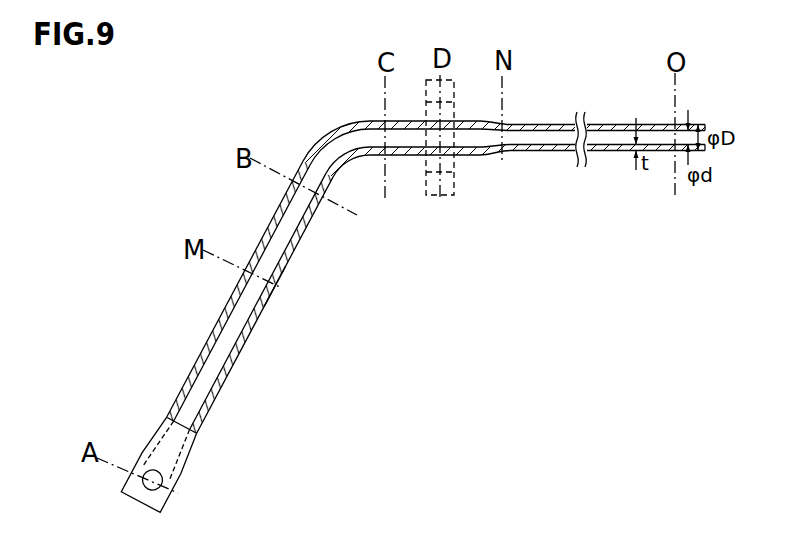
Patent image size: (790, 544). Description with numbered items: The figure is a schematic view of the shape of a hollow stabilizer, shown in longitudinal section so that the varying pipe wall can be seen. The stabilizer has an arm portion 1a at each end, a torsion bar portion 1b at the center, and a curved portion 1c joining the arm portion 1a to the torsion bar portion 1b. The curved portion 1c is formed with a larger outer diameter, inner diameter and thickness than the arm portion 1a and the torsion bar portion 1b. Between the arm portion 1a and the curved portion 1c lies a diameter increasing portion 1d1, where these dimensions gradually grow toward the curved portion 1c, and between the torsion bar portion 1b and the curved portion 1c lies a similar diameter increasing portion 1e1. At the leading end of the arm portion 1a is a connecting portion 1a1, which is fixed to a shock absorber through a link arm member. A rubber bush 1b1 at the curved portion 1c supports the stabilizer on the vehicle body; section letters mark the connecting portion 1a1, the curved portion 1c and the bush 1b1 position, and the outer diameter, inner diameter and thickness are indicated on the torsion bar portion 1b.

The arm portion 1a is at (191, 305).
The torsion bar portion 1b is at (502, 48).
The curved portion 1c is at (497, 48).
The connecting portion 1a1 is at (177, 468).
The rubber bush 1b1 is at (451, 162).
The diameter increasing portion 1d1 is at (296, 287).
The diameter increasing portion 1e1 is at (523, 160).